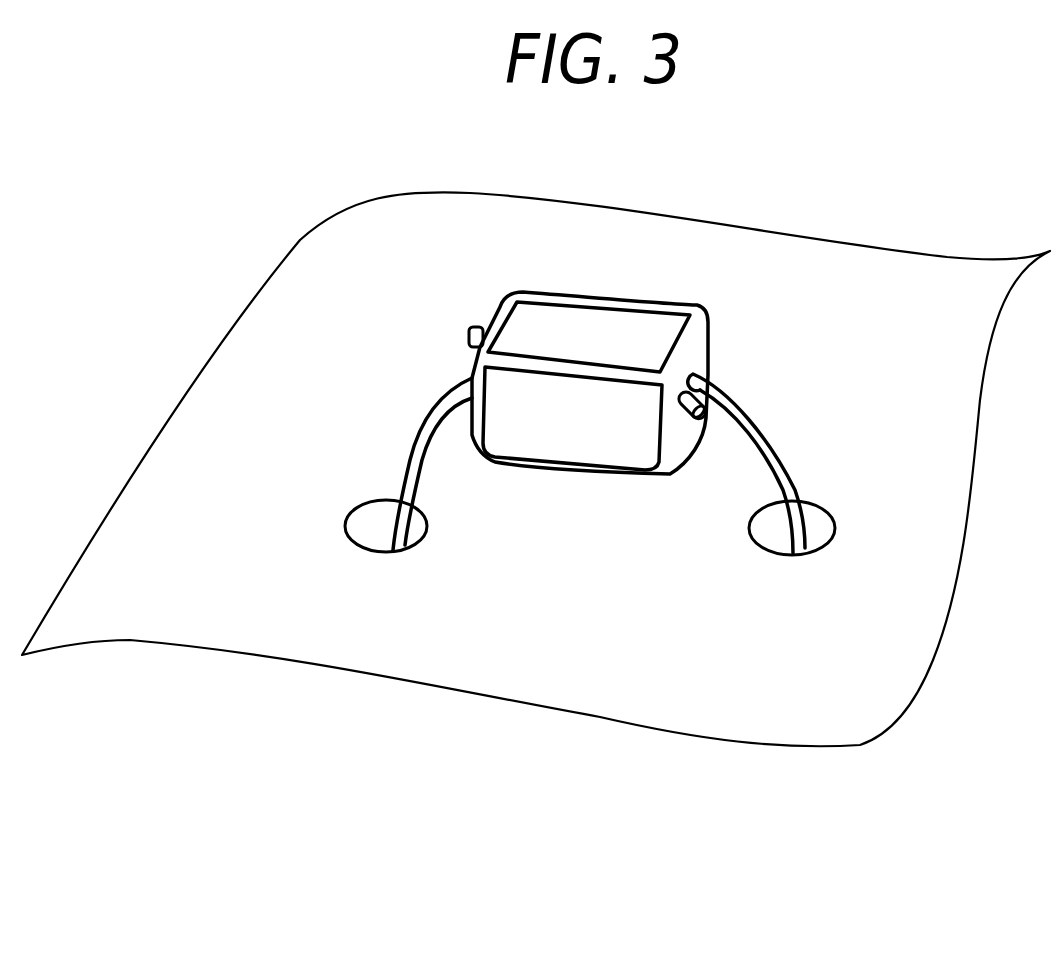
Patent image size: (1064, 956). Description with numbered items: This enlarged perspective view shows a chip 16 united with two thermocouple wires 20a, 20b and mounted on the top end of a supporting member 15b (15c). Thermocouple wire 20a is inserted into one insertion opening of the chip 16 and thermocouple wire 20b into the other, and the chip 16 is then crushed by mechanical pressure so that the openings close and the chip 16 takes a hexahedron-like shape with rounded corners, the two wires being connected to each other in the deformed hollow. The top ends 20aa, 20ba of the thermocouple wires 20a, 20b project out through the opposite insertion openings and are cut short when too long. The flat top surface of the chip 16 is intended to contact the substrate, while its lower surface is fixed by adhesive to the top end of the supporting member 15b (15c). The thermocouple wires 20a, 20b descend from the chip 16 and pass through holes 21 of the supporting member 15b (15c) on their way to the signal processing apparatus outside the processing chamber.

The chip 16 is at (610, 327).
The supporting member 15b is at (536, 541).
The supporting member 15c is at (577, 668).
The thermocouple wire 20a is at (413, 453).
The thermocouple wire 20b is at (752, 428).
The top end of thermocouple wire 20aa is at (685, 421).
The top end of thermocouple wire 20ba is at (469, 336).
The hole 21 is at (350, 530).